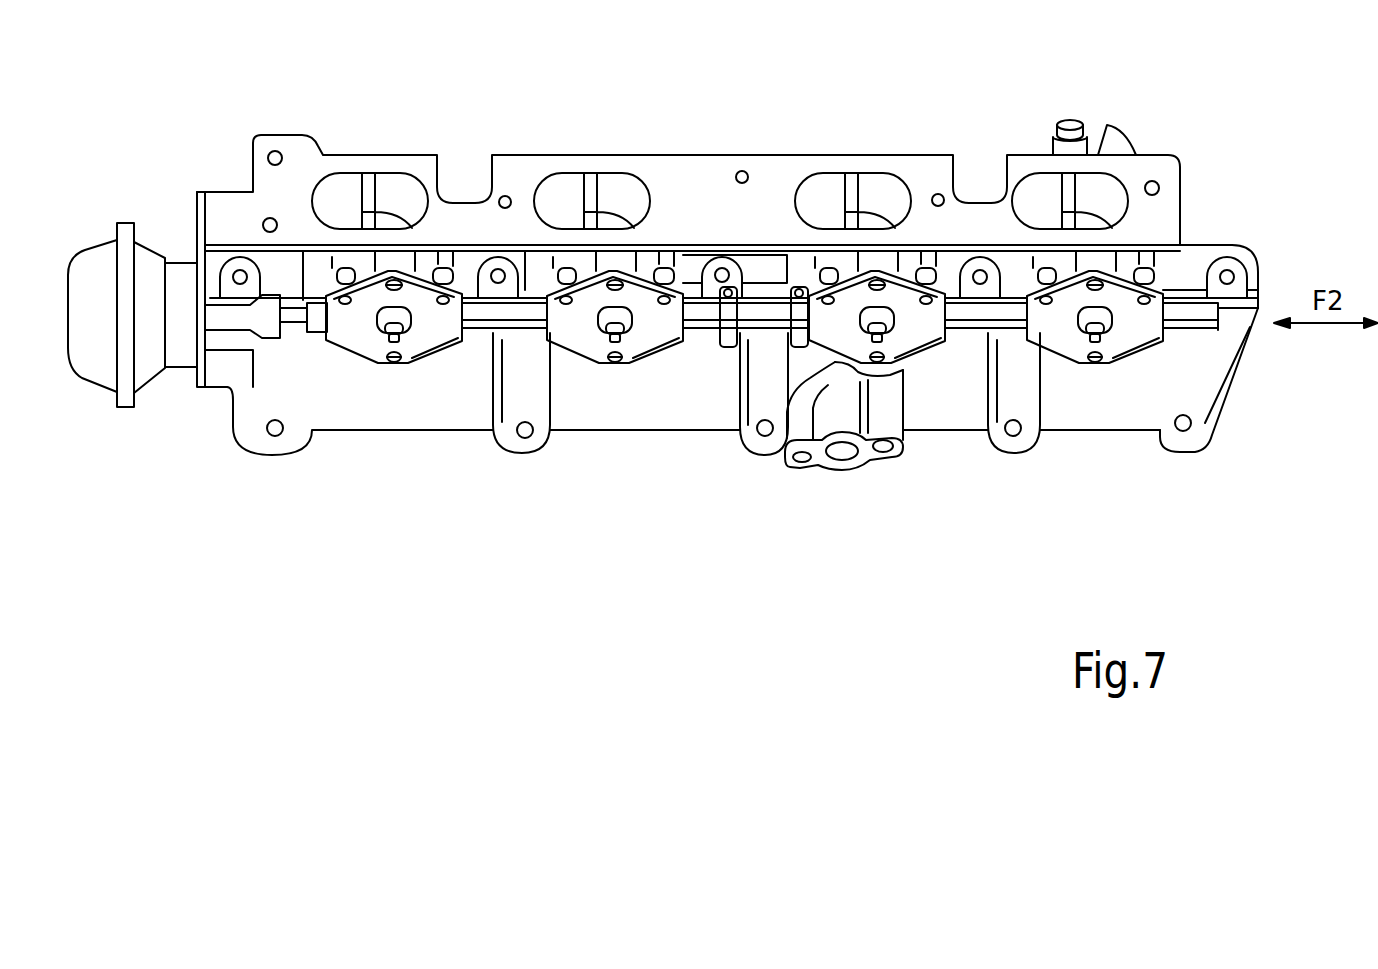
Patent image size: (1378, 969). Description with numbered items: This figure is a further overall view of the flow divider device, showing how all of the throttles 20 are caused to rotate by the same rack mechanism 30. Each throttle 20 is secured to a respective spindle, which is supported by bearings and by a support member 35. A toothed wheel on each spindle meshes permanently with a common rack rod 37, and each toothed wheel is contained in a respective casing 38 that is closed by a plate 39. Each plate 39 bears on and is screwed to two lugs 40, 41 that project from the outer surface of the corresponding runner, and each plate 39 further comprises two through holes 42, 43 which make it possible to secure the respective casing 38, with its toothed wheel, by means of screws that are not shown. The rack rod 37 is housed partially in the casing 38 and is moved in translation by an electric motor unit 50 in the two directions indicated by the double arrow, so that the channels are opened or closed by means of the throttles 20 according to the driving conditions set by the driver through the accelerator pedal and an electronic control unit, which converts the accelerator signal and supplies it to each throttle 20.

The throttle 20 is at (390, 215).
The rack mechanism 30 is at (710, 318).
The support member 35 is at (412, 330).
The rack rod 37 is at (503, 328).
The casing 38 is at (445, 268).
The plate 39 is at (368, 340).
The lug 40 is at (398, 260).
The lug 41 is at (394, 362).
The through hole 42 is at (346, 305).
The through hole 43 is at (452, 348).
The electric motor unit 50 is at (102, 390).